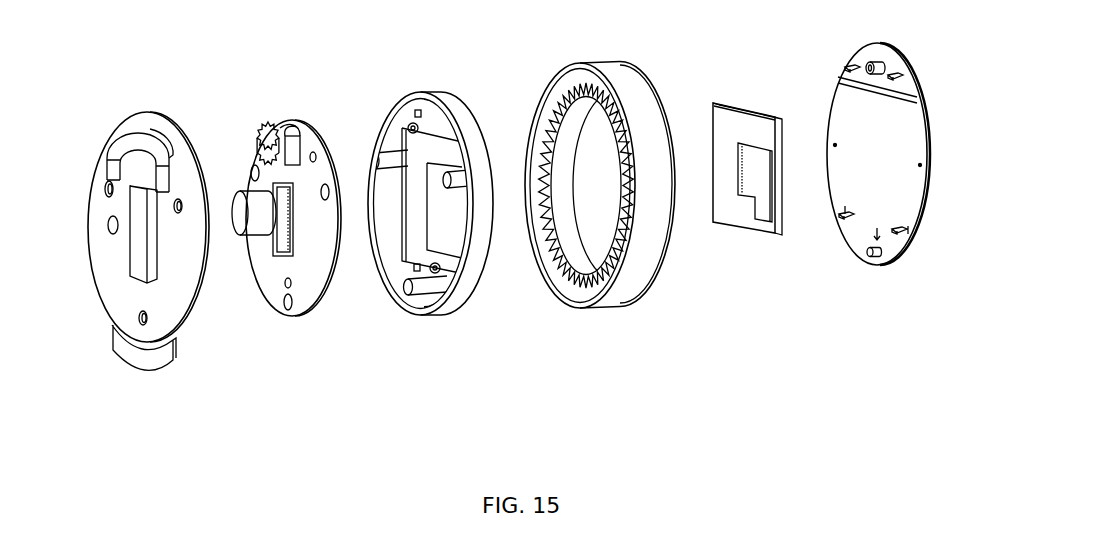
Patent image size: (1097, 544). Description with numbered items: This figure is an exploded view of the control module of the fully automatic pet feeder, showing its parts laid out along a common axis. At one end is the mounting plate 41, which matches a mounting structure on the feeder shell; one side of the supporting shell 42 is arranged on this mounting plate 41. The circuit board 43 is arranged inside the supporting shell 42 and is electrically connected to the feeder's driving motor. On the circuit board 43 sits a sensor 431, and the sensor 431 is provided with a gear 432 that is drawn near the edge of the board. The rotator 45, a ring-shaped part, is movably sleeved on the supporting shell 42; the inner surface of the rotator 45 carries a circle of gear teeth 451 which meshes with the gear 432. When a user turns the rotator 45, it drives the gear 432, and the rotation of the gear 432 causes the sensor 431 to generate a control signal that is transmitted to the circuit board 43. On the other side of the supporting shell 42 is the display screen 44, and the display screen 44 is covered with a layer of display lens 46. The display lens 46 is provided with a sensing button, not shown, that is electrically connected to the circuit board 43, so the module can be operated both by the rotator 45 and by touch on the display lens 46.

The mounting plate 41 is at (155, 372).
The supporting shell 42 is at (440, 313).
The circuit board 43 is at (292, 229).
The sensor 431 is at (300, 145).
The gear 432 is at (260, 138).
The display screen 44 is at (740, 233).
The rotator 45 is at (594, 209).
The gear teeth 451 is at (545, 118).
The display lens 46 is at (879, 264).